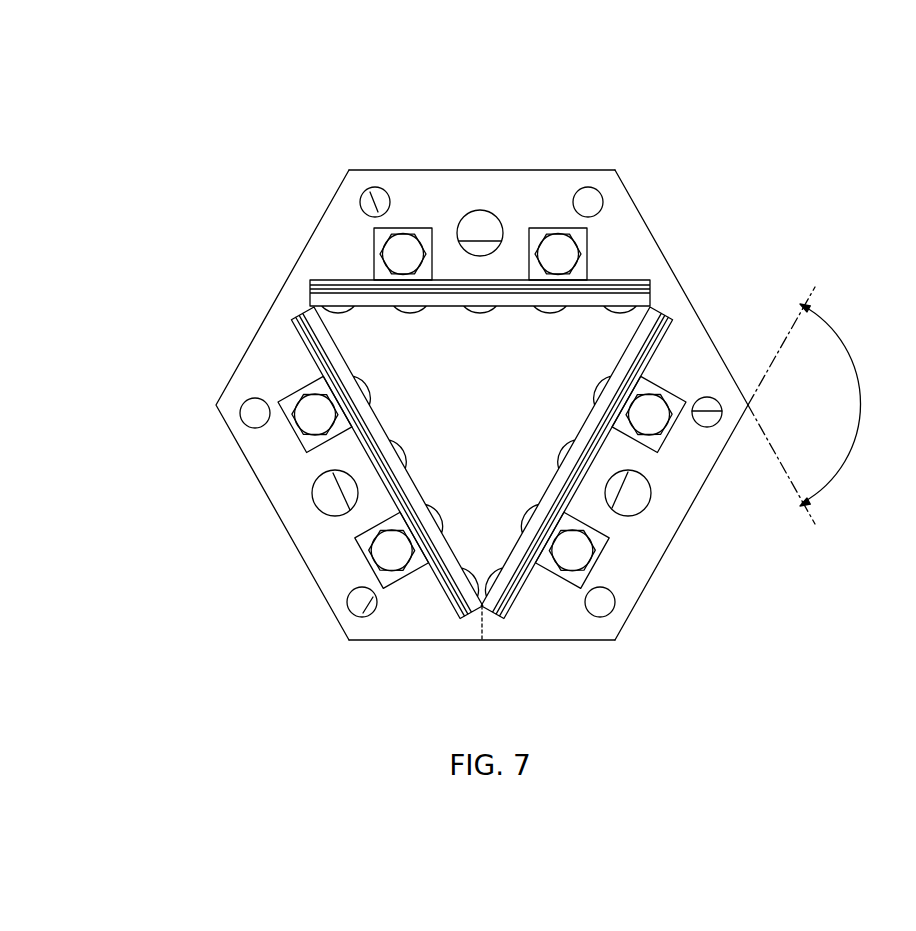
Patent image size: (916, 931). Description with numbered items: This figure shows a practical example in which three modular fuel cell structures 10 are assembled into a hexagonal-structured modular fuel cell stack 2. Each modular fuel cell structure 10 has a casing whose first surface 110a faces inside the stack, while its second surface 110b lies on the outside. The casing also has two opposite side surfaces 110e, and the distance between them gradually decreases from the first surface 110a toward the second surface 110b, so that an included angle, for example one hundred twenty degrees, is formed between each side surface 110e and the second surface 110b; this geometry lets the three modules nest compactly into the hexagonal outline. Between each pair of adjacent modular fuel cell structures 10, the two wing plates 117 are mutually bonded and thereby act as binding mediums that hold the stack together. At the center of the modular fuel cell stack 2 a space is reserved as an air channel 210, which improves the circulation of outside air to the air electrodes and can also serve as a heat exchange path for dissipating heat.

The modular fuel cell stack 2 is at (220, 182).
The modular fuel cell structure 10 is at (520, 168).
The wing plates 117 is at (663, 297).
The first surface 110a is at (650, 306).
The side surfaces 110e is at (722, 360).
The second surface 110b is at (677, 535).
The air channel 210 is at (427, 387).